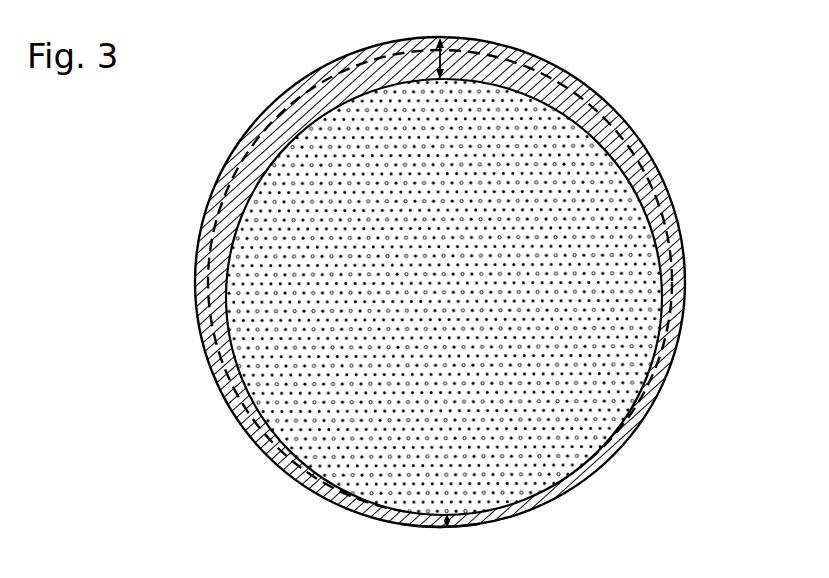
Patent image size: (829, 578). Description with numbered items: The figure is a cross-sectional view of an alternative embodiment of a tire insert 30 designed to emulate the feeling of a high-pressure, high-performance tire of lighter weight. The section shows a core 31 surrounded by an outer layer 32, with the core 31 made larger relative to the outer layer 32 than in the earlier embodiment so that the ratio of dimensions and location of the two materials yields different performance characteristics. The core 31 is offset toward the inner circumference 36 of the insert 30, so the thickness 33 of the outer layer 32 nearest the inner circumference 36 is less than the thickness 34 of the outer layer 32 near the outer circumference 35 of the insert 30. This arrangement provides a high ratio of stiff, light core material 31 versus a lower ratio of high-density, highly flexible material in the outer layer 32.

The tire insert 30 is at (168, 262).
The core 31 is at (543, 158).
The outer layer 32 is at (670, 257).
The thickness 33 is at (417, 523).
The thickness 34 is at (428, 47).
The outer circumference 35 is at (447, 35).
The inner circumference 36 is at (457, 533).